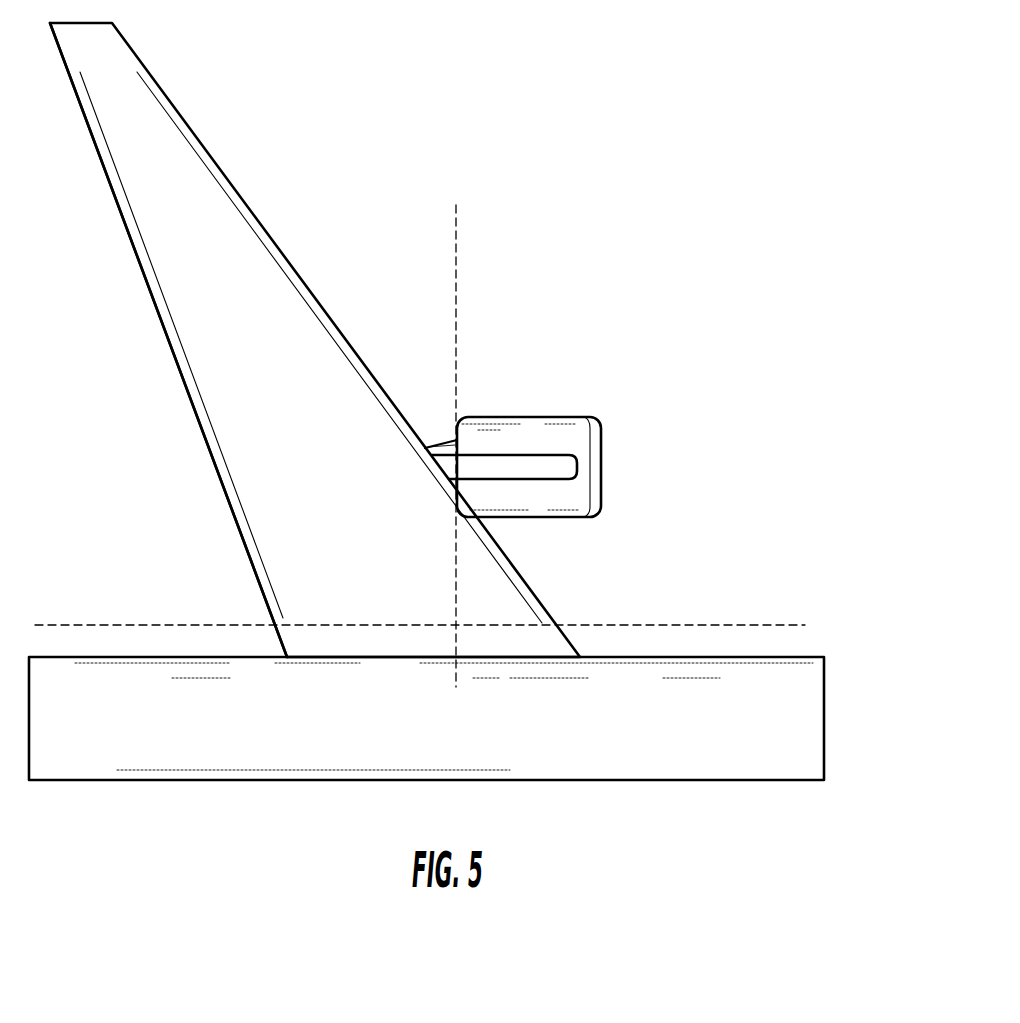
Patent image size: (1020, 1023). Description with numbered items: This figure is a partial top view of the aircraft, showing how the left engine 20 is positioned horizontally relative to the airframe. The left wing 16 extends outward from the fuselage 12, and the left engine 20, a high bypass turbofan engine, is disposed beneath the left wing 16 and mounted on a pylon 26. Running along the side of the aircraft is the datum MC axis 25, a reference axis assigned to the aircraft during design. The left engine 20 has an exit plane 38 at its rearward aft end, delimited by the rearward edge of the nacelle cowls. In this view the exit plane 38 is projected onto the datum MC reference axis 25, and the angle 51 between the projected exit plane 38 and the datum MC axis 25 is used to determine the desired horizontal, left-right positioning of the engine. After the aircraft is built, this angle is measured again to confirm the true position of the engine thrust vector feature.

The fuselage 12 is at (824, 700).
The left wing 16 is at (190, 127).
The left engine 20 is at (530, 428).
The datum MC axis 25 is at (683, 622).
The pylon 26 is at (565, 452).
The exit plane 38 is at (462, 264).
The angle 51 is at (220, 480).